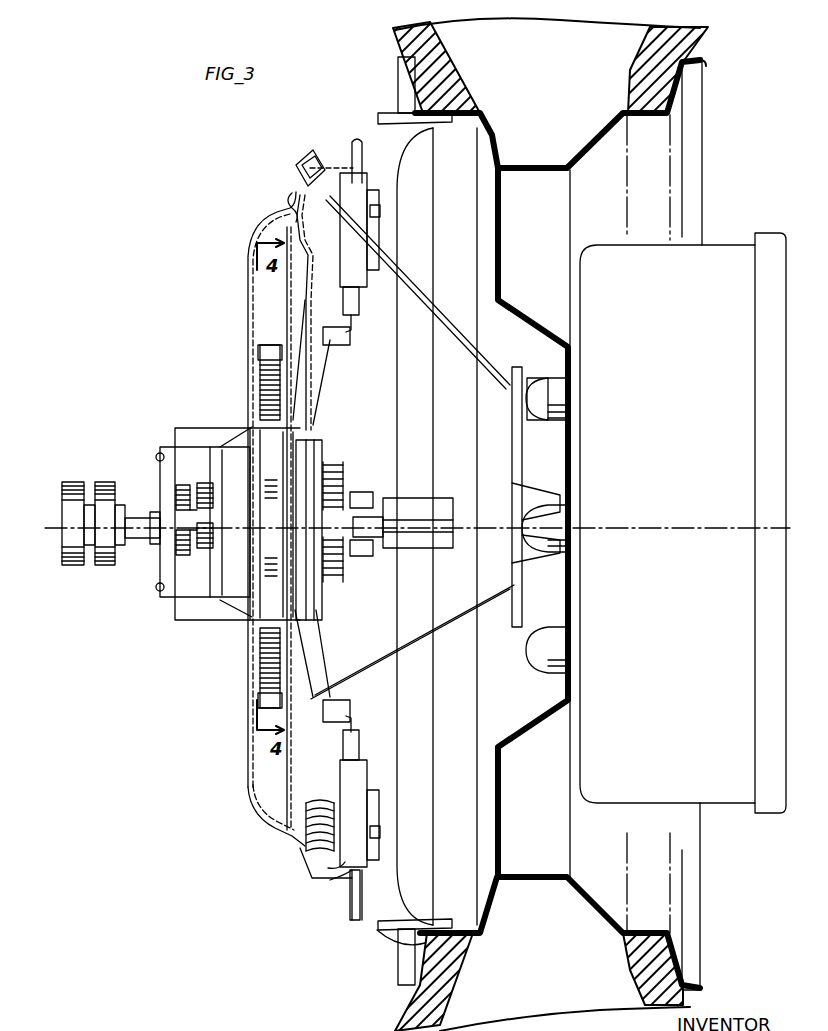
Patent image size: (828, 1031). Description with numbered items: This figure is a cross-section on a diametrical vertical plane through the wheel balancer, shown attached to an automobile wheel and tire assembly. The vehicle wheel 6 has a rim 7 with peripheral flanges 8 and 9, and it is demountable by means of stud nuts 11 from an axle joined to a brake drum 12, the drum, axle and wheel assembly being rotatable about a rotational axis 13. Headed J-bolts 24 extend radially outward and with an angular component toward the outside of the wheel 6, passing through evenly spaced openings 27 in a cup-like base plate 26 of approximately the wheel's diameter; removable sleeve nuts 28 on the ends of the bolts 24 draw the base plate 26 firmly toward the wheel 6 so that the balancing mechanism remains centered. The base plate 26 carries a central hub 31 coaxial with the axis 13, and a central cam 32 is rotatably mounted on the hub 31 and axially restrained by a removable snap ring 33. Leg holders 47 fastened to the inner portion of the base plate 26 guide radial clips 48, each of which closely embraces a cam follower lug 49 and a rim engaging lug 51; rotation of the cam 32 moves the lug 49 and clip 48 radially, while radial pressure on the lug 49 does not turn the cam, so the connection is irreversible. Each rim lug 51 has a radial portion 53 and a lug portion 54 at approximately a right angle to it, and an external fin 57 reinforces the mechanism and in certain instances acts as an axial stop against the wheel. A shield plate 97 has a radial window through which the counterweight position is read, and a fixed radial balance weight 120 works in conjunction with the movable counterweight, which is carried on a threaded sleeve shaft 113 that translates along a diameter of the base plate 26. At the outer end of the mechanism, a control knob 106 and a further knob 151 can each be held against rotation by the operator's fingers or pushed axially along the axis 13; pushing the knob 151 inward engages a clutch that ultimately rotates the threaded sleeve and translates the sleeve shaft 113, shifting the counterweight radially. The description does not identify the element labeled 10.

The wheel 6 is at (502, 237).
The rim 7 is at (658, 116).
The peripheral flange 8 is at (403, 56).
The peripheral flange 9 is at (700, 67).
The motor shaft 10 is at (137, 516).
The stud nuts 11 is at (562, 416).
The brake drum 12 is at (700, 247).
The rotational axis 13 is at (648, 526).
The headed bolts 24 is at (422, 296).
The base plate 26 is at (313, 242).
The openings 27 is at (289, 190).
The sleeve nuts 28 is at (312, 152).
The central hub 31 is at (322, 447).
The central cam 32 is at (327, 630).
The snap ring 33 is at (322, 428).
The leg holders 47 is at (368, 190).
The radial clips 48 is at (358, 302).
The cam follower lug 49 is at (352, 327).
The rim engaging lug 51 is at (352, 912).
The radial portion 53 is at (353, 140).
The lug portion 54 is at (408, 504).
The external fin 57 is at (412, 104).
The shield plate 97 is at (250, 780).
The control knob 106 is at (98, 486).
The sleeve shaft 113 is at (262, 390).
The fixed radial balance weight 120 is at (284, 304).
The knob 151 is at (74, 484).